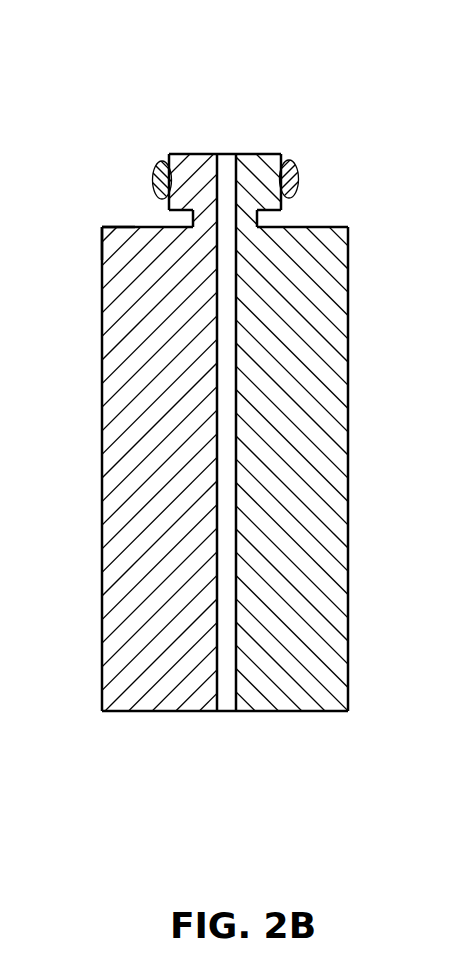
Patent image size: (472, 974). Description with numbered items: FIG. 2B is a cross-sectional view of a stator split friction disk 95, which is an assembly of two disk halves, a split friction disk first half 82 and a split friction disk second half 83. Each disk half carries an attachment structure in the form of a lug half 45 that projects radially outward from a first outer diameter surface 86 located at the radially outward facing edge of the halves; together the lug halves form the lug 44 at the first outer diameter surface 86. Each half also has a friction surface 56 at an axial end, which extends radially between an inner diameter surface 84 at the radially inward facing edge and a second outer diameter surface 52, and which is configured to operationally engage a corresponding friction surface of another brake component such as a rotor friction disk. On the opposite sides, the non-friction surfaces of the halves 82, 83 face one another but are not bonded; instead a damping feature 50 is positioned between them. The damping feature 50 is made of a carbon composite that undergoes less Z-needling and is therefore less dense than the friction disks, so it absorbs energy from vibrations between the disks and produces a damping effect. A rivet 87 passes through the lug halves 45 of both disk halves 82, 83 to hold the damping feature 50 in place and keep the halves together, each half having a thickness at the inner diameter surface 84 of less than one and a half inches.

The lug 44 is at (231, 398).
The lug half 45 is at (200, 153).
The damping feature 50 is at (225, 345).
The second outer diameter surface 52 is at (229, 142).
The friction surface 56 is at (102, 495).
The split friction disk first half 82 is at (105, 217).
The split friction disk second half 83 is at (347, 215).
The inner diameter surface 84 is at (153, 712).
The first outer diameter surface 86 is at (145, 227).
The rivet 87 is at (298, 161).
The stator split friction disk 95 is at (367, 94).